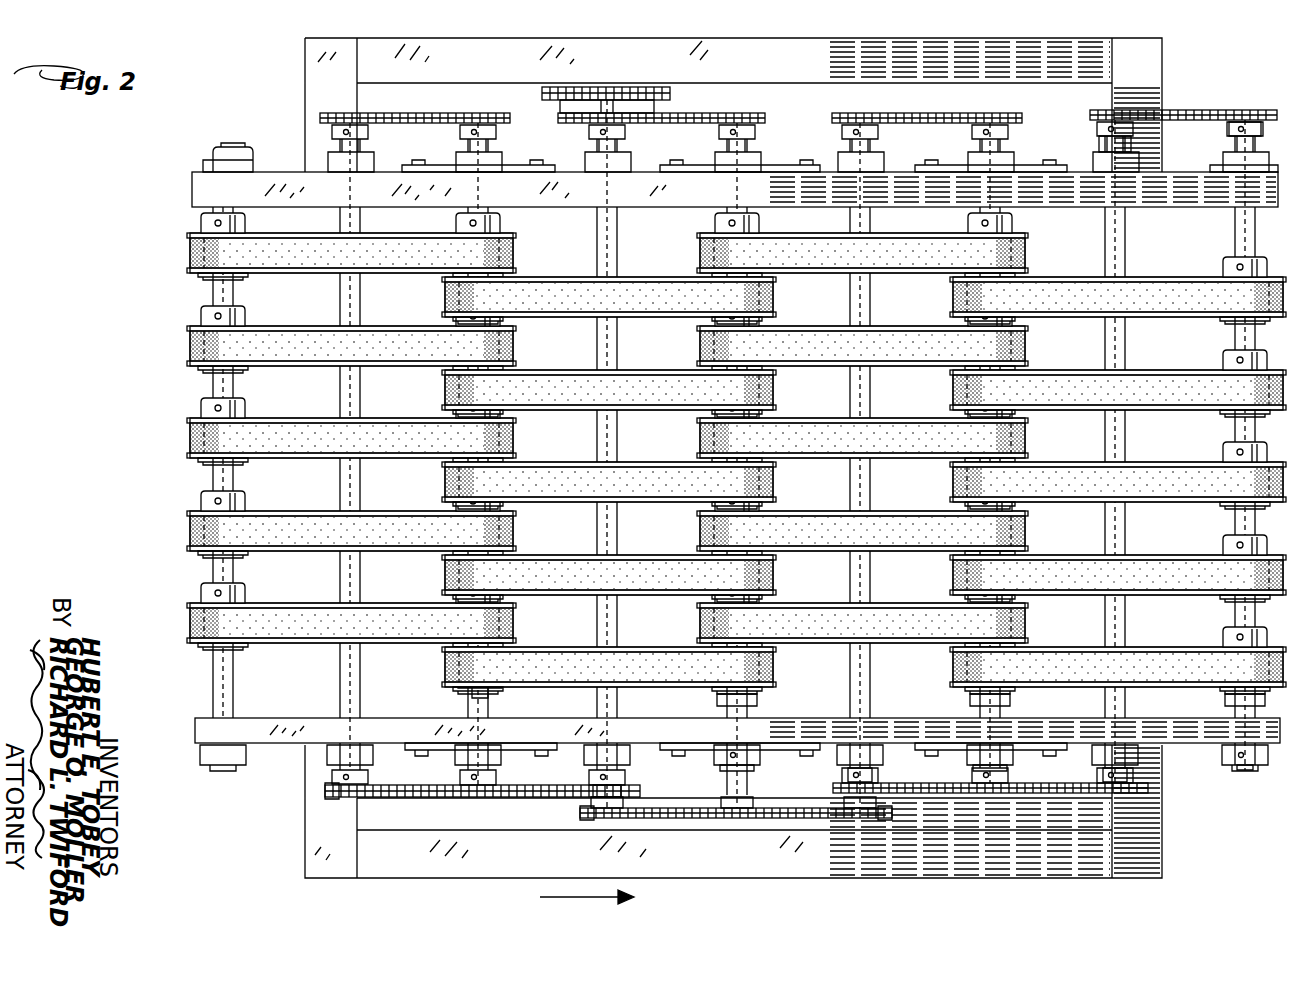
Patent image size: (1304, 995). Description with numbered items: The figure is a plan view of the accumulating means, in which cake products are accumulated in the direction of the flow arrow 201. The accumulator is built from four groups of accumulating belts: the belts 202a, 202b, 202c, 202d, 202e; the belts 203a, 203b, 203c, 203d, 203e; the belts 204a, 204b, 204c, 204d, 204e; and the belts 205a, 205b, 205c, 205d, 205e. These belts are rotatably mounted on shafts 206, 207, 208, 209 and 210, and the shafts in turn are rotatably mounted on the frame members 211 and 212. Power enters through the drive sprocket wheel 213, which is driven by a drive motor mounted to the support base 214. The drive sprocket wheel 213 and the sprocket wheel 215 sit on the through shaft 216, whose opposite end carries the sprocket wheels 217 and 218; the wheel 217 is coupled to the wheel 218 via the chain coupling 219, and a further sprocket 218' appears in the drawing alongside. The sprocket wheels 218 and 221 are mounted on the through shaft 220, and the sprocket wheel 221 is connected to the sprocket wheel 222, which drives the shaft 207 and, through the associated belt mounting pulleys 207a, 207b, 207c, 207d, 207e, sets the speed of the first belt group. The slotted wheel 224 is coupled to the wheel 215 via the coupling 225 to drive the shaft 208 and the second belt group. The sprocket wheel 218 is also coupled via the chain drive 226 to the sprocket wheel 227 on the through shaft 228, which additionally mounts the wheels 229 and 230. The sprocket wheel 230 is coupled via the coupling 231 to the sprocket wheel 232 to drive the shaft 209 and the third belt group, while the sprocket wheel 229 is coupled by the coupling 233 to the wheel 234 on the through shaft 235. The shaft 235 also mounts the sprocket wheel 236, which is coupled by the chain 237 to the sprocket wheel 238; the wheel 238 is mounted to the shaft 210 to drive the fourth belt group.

The flow arrow 201 is at (580, 899).
The accumulator belt 202a is at (389, 259).
The accumulator belt 202b is at (389, 353).
The accumulator belt 202c is at (388, 450).
The accumulator belt 202d is at (389, 542).
The accumulator belt 202e is at (389, 647).
The accumulator belt 203a is at (669, 285).
The accumulator belt 203b is at (660, 380).
The accumulator belt 203c is at (662, 472).
The accumulator belt 203d is at (662, 565).
The accumulator belt 203e is at (662, 662).
The accumulator belt 204a is at (922, 262).
The accumulator belt 204b is at (922, 352).
The accumulator belt 204c is at (925, 456).
The accumulator belt 204d is at (923, 549).
The accumulator belt 204e is at (925, 632).
The accumulator belt 205a is at (1063, 288).
The accumulator belt 205b is at (1062, 382).
The accumulator belt 205c is at (1060, 475).
The accumulator belt 205d is at (1060, 565).
The accumulator belt 205e is at (1060, 655).
The shaft 206 is at (218, 686).
The shaft 207 is at (490, 710).
The belt mounting pulley 207a is at (514, 256).
The belt mounting pulley 207b is at (512, 348).
The belt mounting pulley 207c is at (512, 441).
The belt mounting pulley 207d is at (512, 534).
The belt mounting pulley 207e is at (512, 627).
The shaft 208 is at (750, 708).
The shaft 209 is at (1002, 706).
The shaft 210 is at (1240, 707).
The frame member 211 is at (195, 186).
The frame member 212 is at (200, 733).
The drive sprocket wheel 213 is at (595, 90).
The support base 214 is at (875, 72).
The sprocket wheel 215 is at (618, 130).
The through shaft 216 is at (628, 222).
The sprocket wheel 217 is at (623, 778).
The sprocket wheel 218 is at (294, 804).
The sprocket 218' is at (552, 814).
The chain coupling 219 is at (450, 800).
The through shaft 220 is at (338, 677).
The sprocket wheel 221 is at (430, 113).
The sprocket wheel 222 is at (487, 113).
The slotted wheel 224 is at (752, 118).
The coupling 225 is at (678, 112).
The chain drive 226 is at (725, 808).
The sprocket wheel 227 is at (882, 802).
The through shaft 228 is at (876, 672).
The sprocket wheel 229 is at (848, 778).
The sprocket wheel 230 is at (845, 128).
The coupling 231 is at (950, 121).
The sprocket wheel 232 is at (1000, 126).
The coupling 233 is at (1045, 800).
The wheel 234 is at (1140, 775).
The through shaft 235 is at (1140, 695).
The sprocket wheel 236 is at (1128, 124).
The chain 237 is at (1195, 108).
The sprocket wheel 238 is at (1250, 108).